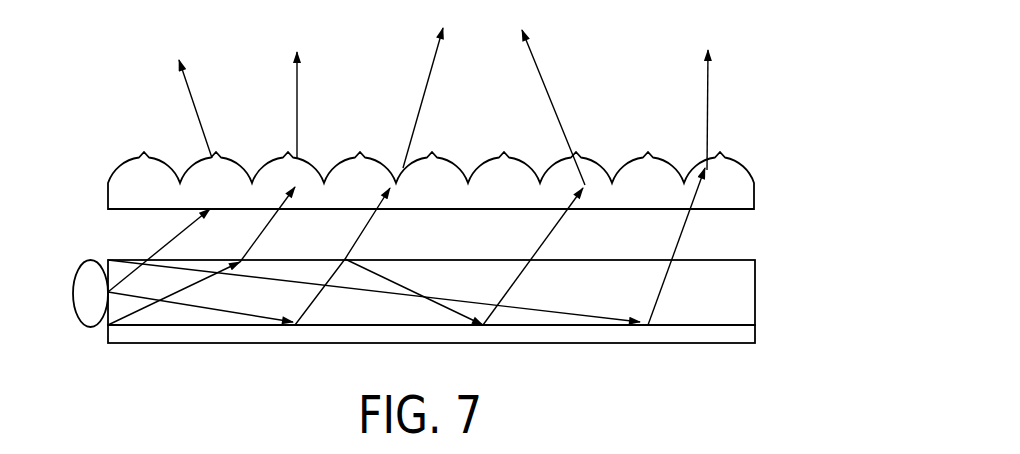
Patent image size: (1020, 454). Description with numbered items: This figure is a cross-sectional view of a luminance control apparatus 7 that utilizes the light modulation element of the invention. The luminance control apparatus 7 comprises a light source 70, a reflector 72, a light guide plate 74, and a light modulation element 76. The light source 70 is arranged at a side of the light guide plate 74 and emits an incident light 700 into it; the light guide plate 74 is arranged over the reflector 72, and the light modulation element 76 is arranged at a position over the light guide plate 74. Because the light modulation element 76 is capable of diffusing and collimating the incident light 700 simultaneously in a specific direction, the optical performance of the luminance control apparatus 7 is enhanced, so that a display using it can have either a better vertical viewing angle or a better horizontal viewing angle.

The luminance control apparatus 7 is at (800, 147).
The light source 70 is at (83, 308).
The incident light 700 is at (135, 295).
The reflector 72 is at (743, 333).
The light guide plate 74 is at (743, 295).
The light modulation element 76 is at (760, 192).